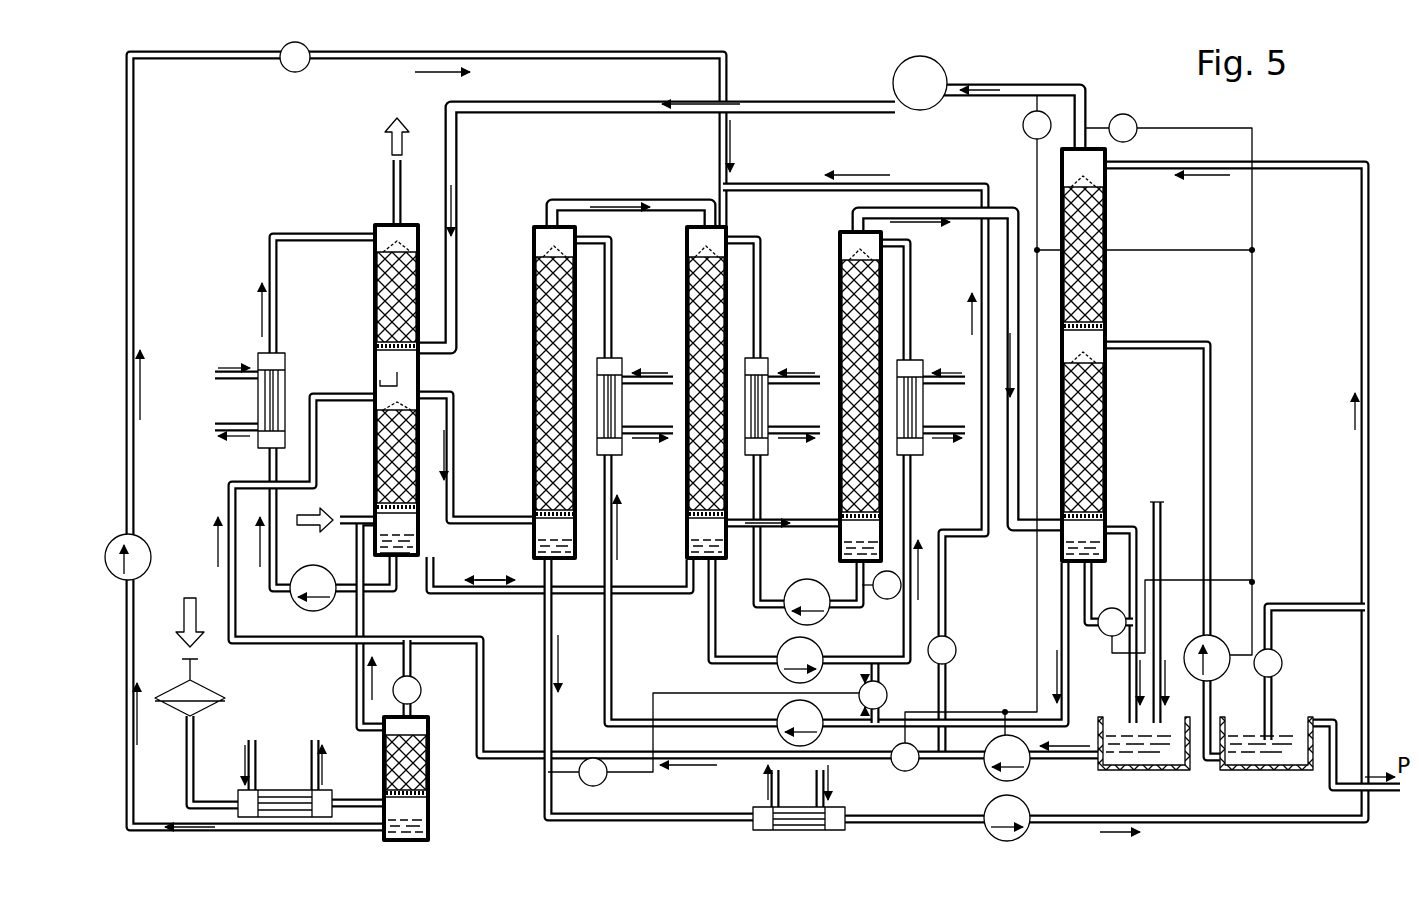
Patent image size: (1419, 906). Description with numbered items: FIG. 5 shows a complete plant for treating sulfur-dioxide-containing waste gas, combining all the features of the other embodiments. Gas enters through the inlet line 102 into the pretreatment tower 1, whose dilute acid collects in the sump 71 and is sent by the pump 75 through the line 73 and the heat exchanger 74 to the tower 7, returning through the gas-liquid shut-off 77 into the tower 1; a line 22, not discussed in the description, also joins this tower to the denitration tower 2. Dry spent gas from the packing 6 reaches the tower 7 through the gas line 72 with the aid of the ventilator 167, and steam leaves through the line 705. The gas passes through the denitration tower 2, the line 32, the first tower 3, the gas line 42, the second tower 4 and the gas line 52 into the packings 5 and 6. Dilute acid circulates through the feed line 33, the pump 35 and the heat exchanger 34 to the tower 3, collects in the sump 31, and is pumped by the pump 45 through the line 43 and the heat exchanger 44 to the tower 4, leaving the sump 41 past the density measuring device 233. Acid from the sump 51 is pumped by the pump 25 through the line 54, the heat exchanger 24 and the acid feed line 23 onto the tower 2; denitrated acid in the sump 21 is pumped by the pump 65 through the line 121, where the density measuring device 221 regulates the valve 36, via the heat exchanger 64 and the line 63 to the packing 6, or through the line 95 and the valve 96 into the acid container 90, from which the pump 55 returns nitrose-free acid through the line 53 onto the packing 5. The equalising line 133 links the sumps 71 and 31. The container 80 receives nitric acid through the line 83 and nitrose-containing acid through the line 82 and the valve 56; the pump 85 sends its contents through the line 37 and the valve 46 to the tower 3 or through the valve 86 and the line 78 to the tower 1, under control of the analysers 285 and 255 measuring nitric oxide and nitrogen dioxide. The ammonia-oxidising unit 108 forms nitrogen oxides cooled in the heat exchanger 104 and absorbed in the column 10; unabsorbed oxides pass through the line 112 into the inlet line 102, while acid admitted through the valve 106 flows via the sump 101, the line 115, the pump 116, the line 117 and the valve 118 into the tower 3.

The pretreatment tower 1 is at (370, 455).
The denitration tower 2 is at (527, 318).
The first tower 3 is at (682, 325).
The second tower 4 is at (835, 320).
The packing 5 is at (1108, 410).
The packing 6 is at (1110, 222).
The tower 7 is at (371, 295).
The absorption column 10 is at (432, 752).
The sump 21 is at (532, 548).
The line to column 2 22 is at (453, 425).
The acid feed line 23 is at (612, 282).
The heat exchanger 24 is at (612, 410).
The pump 25 is at (780, 735).
The sump 31 is at (685, 550).
The line 32 is at (660, 212).
The dilute acid feed line 33 is at (750, 238).
The heat exchanger 34 is at (770, 410).
The pump 35 is at (796, 598).
The valve 36 is at (888, 695).
The line 37 is at (818, 190).
The sump 41 is at (836, 548).
The gas line 42 is at (780, 524).
The line 43 is at (710, 640).
The heat exchanger 44 is at (915, 410).
The pump 45 is at (780, 670).
The valve 46 is at (960, 642).
The sump 51 is at (1060, 553).
The gas line 52 is at (970, 218).
The line 53 is at (1160, 345).
The line 54 is at (612, 637).
The pump 55 is at (1218, 678).
The valve 56 is at (1113, 607).
The line 63 is at (1362, 250).
The heat exchanger 64 is at (760, 806).
The pump 65 is at (988, 808).
The sump 71 is at (420, 548).
The gas line 72 is at (456, 250).
The line 73 is at (315, 236).
The heat exchanger 74 is at (268, 400).
The pump 75 is at (300, 597).
The gas-liquid shut-off 77 is at (376, 378).
The line 78 is at (315, 437).
The container 80 is at (1168, 770).
The line 82 is at (1083, 602).
The line 83 is at (1160, 558).
The pump 85 is at (998, 774).
The valve 86 is at (893, 753).
The acid container 90 is at (1275, 770).
The line 95 is at (1308, 607).
The valve 96 is at (1283, 662).
The sump 101 is at (430, 822).
The inlet line 102 is at (358, 518).
The heat exchanger 104 is at (288, 790).
The valve 106 is at (421, 690).
The ammonia-oxidising unit 108 is at (200, 692).
The line 112 is at (358, 688).
The line 115 is at (353, 802).
The pump 116 is at (150, 550).
The line 117 is at (596, 60).
The valve 118 is at (305, 70).
The line 121 is at (625, 817).
The equalising line 133 is at (500, 593).
The ventilator 167 is at (925, 106).
The density measuring device 221 is at (586, 784).
The density measuring device 233 is at (886, 600).
The analyser 255 is at (1135, 122).
The analyser 285 is at (1022, 128).
The line 705 is at (395, 176).